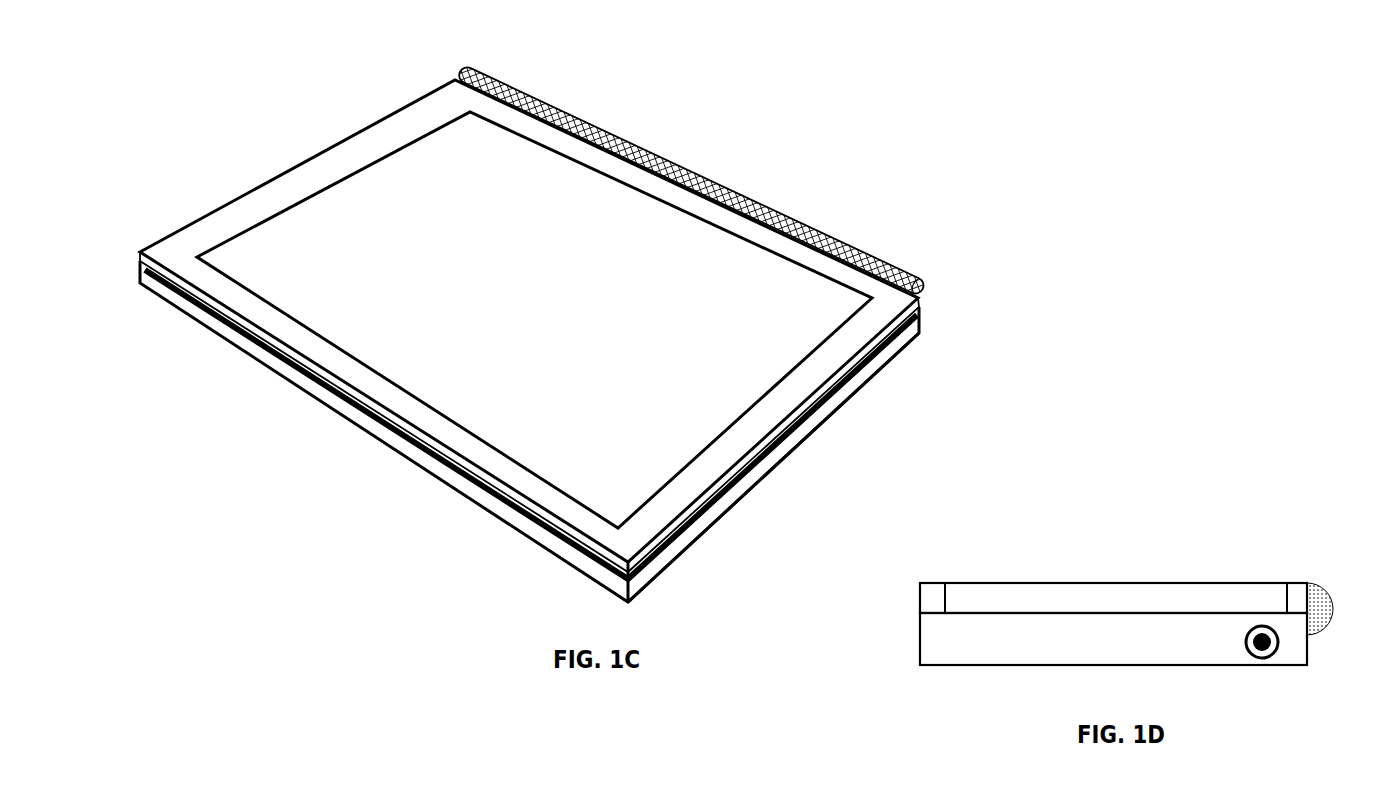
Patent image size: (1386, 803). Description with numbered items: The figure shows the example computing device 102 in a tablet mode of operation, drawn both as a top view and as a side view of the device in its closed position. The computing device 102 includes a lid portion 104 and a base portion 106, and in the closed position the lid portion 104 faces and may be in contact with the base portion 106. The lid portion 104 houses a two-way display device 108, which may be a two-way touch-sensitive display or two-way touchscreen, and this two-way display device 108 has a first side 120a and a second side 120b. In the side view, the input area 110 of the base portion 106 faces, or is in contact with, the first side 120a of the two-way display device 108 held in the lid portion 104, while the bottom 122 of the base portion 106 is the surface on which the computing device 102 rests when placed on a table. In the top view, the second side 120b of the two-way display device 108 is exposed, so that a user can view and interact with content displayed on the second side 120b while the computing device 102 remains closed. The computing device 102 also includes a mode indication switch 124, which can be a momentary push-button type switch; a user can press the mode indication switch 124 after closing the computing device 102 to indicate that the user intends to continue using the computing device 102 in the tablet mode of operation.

In FIG. 1C, the computing device 102 is at (209, 124).
In FIG. 1D, the computing device 102 is at (1262, 503).
In FIG. 1C, the lid portion 104 is at (199, 219).
In FIG. 1D, the lid portion 104 is at (918, 600).
In FIG. 1C, the base portion 106 is at (675, 552).
In FIG. 1D, the base portion 106 is at (918, 650).
In FIG. 1C, the two-way display device 108 is at (757, 403).
In FIG. 1D, the two-way display device 108 is at (1135, 608).
In FIG. 1D, the input area 110 is at (1175, 613).
In FIG. 1D, the first side 120a is at (978, 613).
In FIG. 1C, the second side 120b is at (558, 300).
In FIG. 1D, the second side 120b is at (1127, 583).
In FIG. 1C, the bottom 122 is at (898, 348).
In FIG. 1D, the bottom 122 is at (1250, 665).
In FIG. 1D, the mode indication switch 124 is at (1279, 641).